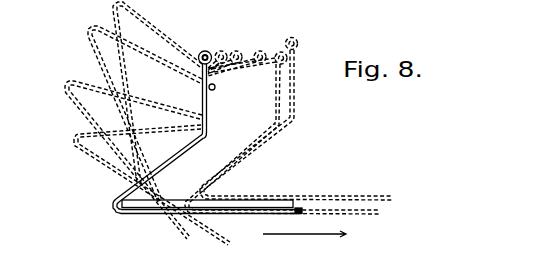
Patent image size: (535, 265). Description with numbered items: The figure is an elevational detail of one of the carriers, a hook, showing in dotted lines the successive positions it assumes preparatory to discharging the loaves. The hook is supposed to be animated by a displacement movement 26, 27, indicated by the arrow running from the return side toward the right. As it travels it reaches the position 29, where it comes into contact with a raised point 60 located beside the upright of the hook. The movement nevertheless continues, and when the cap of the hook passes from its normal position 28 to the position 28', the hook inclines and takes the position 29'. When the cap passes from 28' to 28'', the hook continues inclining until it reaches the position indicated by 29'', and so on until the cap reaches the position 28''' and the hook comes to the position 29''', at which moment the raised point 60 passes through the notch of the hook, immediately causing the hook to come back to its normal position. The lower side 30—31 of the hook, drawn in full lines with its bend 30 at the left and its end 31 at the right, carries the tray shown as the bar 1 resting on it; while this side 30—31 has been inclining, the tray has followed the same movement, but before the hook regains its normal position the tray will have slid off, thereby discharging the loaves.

The cap of the hook 28 is at (164, 102).
The first displaced position of the hook cap 28' is at (233, 38).
The second displaced position of the hook cap 28'' is at (252, 39).
The third displaced position of the hook cap 28''' is at (289, 108).
The position of the hook on contacting raised point 29 is at (152, 185).
The first inclined position of the hook 29' is at (133, 160).
The second inclined position of the hook 29'' is at (145, 114).
The fullest inclined position of the hook 29''' is at (157, 92).
The raised point 60 is at (227, 89).
The bar 1 is at (192, 202).
The end of the hook side 30 is at (125, 210).
The end of the hook side 31 is at (298, 209).
The displacement movement 26 is at (209, 230).
The displacement movement 27 is at (325, 233).